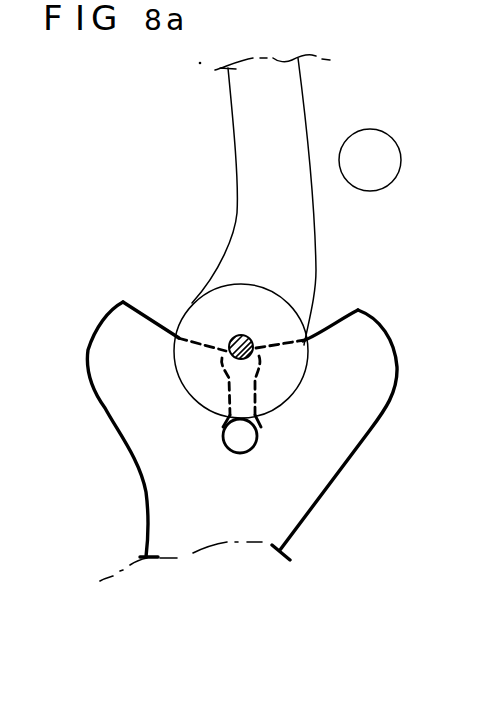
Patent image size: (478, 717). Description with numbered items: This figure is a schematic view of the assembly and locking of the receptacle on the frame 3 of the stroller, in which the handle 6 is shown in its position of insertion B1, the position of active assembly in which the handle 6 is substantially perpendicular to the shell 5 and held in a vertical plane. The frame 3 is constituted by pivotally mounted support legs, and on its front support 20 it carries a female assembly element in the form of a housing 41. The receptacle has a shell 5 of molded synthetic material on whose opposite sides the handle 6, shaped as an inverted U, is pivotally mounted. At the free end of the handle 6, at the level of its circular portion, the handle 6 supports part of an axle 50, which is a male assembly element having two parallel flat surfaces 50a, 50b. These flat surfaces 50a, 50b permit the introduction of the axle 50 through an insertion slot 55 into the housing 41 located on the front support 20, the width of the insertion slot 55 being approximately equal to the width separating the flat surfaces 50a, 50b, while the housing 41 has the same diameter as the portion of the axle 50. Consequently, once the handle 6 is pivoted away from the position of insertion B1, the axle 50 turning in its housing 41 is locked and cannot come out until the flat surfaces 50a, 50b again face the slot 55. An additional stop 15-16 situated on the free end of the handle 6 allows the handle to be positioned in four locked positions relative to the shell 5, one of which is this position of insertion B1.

The frame 3 is at (132, 602).
The shell 5 is at (282, 429).
The handle 6 is at (292, 137).
The additional stop 15-16 is at (233, 296).
The front support 20 is at (282, 505).
The housing 41 is at (243, 444).
The axle 50 is at (256, 344).
The flat surface 50a is at (249, 337).
The flat surface 50b is at (233, 338).
The insertion slot 55 is at (257, 394).
The position of insertion B1 is at (370, 160).